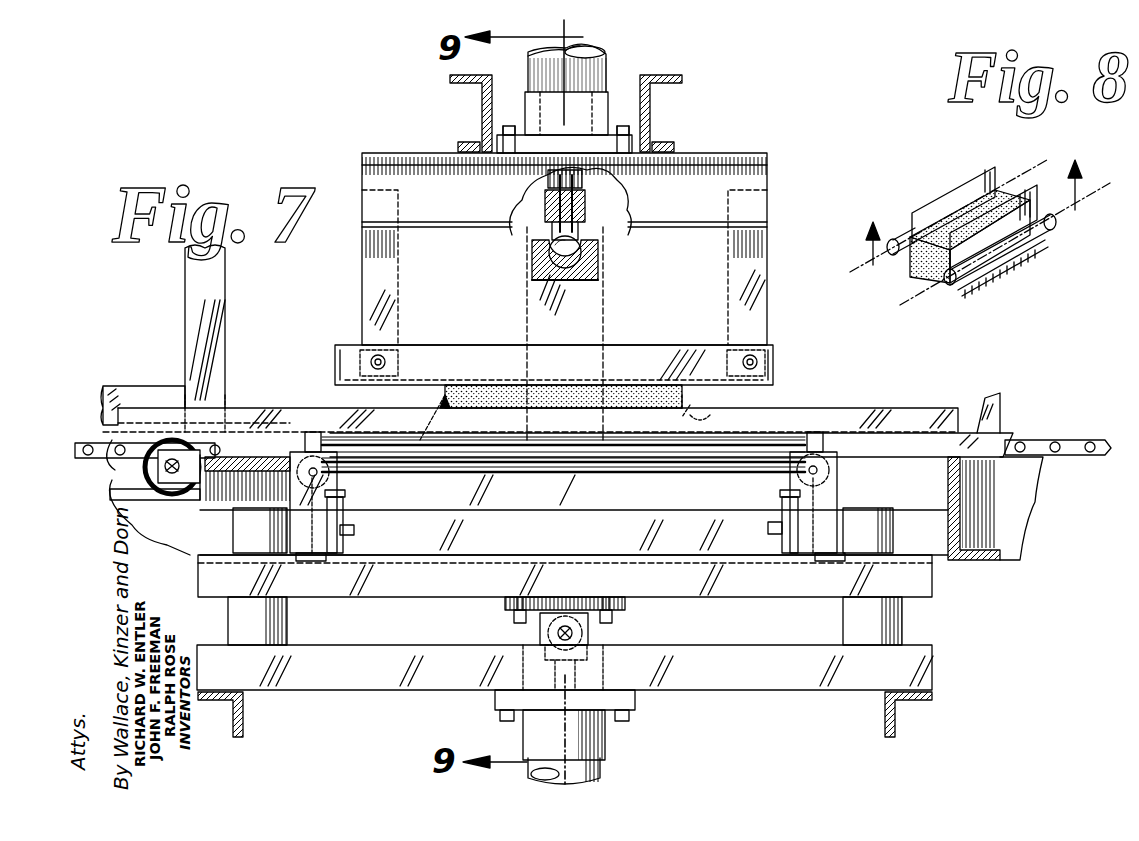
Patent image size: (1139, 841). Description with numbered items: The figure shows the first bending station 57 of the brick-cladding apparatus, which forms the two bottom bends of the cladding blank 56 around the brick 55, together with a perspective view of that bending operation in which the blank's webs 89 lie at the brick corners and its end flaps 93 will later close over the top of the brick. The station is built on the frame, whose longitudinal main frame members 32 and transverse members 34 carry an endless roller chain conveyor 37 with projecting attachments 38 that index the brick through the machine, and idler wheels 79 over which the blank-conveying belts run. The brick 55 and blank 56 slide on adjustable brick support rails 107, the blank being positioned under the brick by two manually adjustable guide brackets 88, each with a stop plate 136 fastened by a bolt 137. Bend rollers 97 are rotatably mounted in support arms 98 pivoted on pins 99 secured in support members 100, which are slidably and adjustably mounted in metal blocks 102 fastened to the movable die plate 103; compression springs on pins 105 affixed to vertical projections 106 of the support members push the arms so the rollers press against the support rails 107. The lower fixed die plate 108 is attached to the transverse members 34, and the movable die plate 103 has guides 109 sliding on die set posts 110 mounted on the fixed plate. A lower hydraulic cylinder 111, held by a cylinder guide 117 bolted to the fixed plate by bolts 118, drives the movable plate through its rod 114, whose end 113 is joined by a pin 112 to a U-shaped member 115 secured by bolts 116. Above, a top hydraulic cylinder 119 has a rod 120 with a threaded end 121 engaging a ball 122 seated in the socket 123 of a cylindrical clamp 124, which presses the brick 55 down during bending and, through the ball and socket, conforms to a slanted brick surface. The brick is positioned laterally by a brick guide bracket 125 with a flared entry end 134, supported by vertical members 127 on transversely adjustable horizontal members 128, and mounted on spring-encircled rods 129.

In FIG. 7, the longitudinal main frame members 32 is at (1018, 520).
In FIG. 7, the transverse members 34 is at (482, 100).
In FIG. 7, the roller chain type conveyor 37 is at (1080, 440).
In FIG. 7, the projecting attachments 38 is at (438, 404).
In FIG. 7, the brick 55 is at (450, 388).
In FIG. 8, the brick 55 is at (912, 276).
In FIG. 8, the cladding blank 56 is at (951, 184).
In FIG. 7, the first bending station 57 is at (736, 144).
In FIG. 7, the idler wheels 79 is at (145, 466).
In FIG. 7, the guide brackets 88 is at (830, 408).
In FIG. 8, the webs 89 is at (1012, 265).
In FIG. 8, the end flaps 93 is at (920, 205).
In FIG. 7, the bend rollers 97 is at (613, 462).
In FIG. 8, the bend rollers 97 is at (894, 236).
In FIG. 7, the support arms 98 is at (310, 437).
In FIG. 7, the pins 99 is at (293, 513).
In FIG. 7, the support members 100 is at (302, 554).
In FIG. 7, the metal blocks 102 is at (347, 563).
In FIG. 7, the movable die plate 103 is at (782, 598).
In FIG. 7, the pins 105 is at (318, 470).
In FIG. 7, the vertical projections 106 is at (338, 489).
In FIG. 7, the brick support rails 107 is at (893, 455).
In FIG. 7, the lower fixed die plate 108 is at (428, 692).
In FIG. 7, the guides 109 is at (287, 623).
In FIG. 7, the die set posts 110 is at (235, 533).
In FIG. 7, the lower hydraulic cylinder 111 is at (606, 762).
In FIG. 7, the pin 112 is at (585, 632).
In FIG. 7, the end of the hydraulic cylinder rod 113 is at (588, 655).
In FIG. 7, the hydraulic cylinder rod 114 is at (580, 675).
In FIG. 7, the U-shaped member 115 is at (540, 628).
In FIG. 7, the bolts 116 is at (514, 616).
In FIG. 7, the cylinder guide 117 is at (525, 738).
In FIG. 7, the bolts 118 is at (498, 714).
In FIG. 7, the top hydraulic cylinder 119 is at (595, 55).
In FIG. 7, the rod 120 is at (551, 212).
In FIG. 7, the threaded end 121 is at (585, 212).
In FIG. 7, the ball 122 is at (549, 252).
In FIG. 7, the socket 123 is at (598, 259).
In FIG. 7, the cylindrical clamp 124 is at (580, 282).
In FIG. 7, the brick guide bracket 125 is at (626, 350).
In FIG. 7, the vertical members 127 is at (365, 268).
In FIG. 7, the horizontal members 128 is at (366, 182).
In FIG. 7, the rods 129 is at (377, 345).
In FIG. 7, the flared end 134 is at (337, 370).
In FIG. 7, the stop plate 136 is at (690, 415).
In FIG. 7, the bolt 137 is at (706, 418).